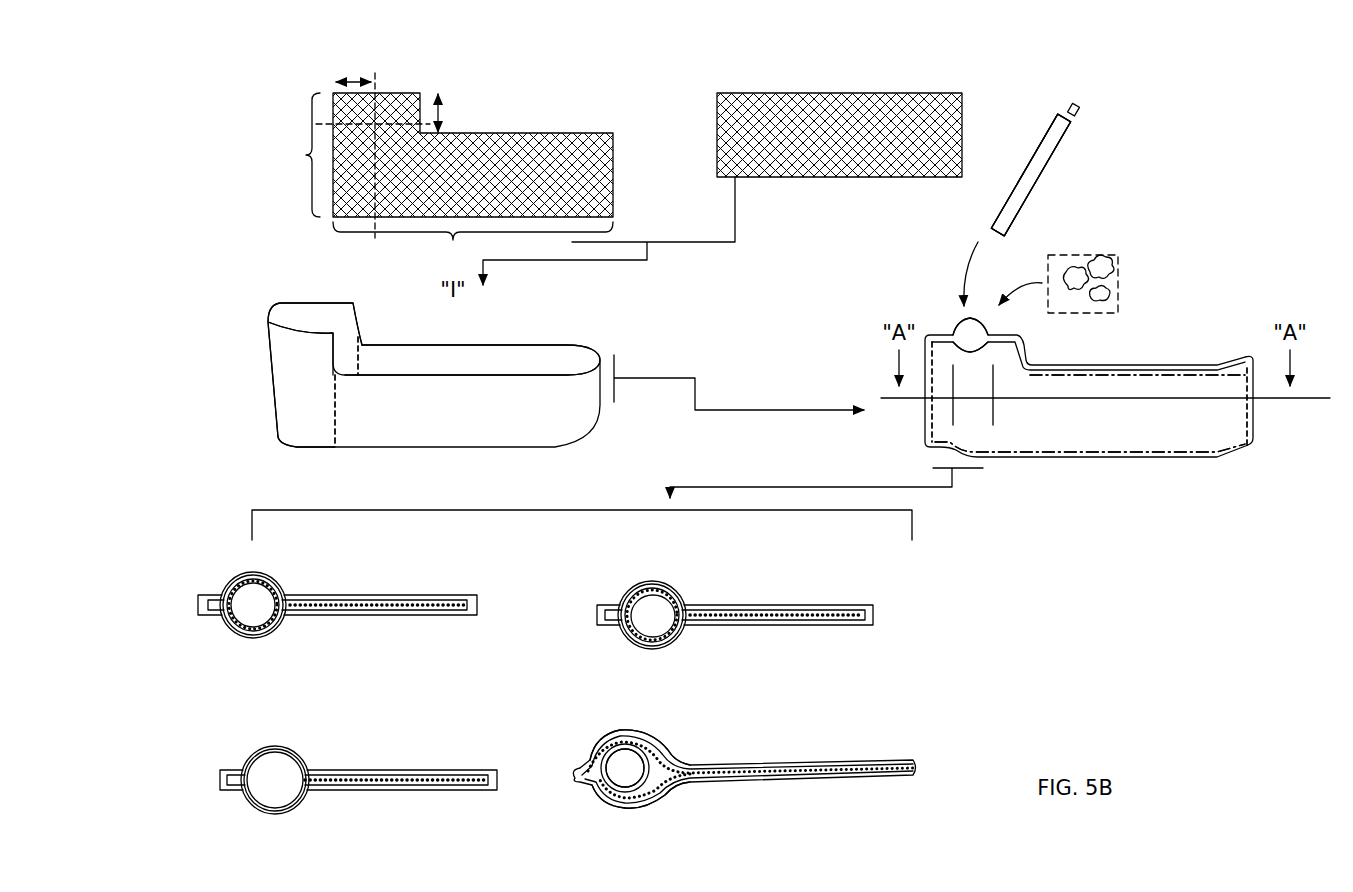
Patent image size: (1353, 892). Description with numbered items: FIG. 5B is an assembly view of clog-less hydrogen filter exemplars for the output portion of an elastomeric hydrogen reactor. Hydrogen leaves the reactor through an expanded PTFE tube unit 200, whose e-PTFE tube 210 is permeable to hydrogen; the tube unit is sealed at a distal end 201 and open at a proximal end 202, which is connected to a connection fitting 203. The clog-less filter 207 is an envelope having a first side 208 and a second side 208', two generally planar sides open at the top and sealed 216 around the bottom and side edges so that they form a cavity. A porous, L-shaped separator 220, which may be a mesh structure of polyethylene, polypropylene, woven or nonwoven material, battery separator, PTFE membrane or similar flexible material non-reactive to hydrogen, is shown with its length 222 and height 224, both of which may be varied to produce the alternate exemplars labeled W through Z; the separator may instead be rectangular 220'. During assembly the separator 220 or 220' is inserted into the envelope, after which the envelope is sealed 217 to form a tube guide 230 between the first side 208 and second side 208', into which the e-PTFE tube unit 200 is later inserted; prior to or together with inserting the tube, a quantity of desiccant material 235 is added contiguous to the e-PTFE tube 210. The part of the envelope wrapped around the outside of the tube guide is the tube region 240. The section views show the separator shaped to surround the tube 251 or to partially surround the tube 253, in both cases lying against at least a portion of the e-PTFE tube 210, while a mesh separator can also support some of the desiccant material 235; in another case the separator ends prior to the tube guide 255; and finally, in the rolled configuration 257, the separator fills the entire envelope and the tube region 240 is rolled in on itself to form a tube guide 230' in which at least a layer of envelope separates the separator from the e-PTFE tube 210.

The e-PTFE tube unit 200 is at (1099, 79).
The distal end 201 is at (994, 221).
The proximal end 202 is at (1068, 133).
The connection fitting 203 is at (1079, 117).
The clog-less filter 207 is at (276, 287).
The first side 208 is at (1089, 387).
The second side 208' is at (472, 360).
The e-PTFE tube 210 is at (1037, 174).
The seal 216 is at (925, 412).
The seal 217 is at (1098, 375).
The separator 220 is at (493, 156).
The rectangular separator 220' is at (883, 135).
The length 222 is at (342, 79).
The height 224 is at (443, 109).
The tube guide 230 is at (950, 316).
The tube guide 230' is at (633, 748).
The desiccant material 235 is at (1120, 285).
The tube region 240 is at (318, 411).
The separator surrounding the tube 251 is at (283, 561).
The separator partially surrounding the tube 253 is at (603, 577).
The separator ending prior to the tube guide 255 is at (222, 756).
The rolled tube guide configuration 257 is at (565, 726).